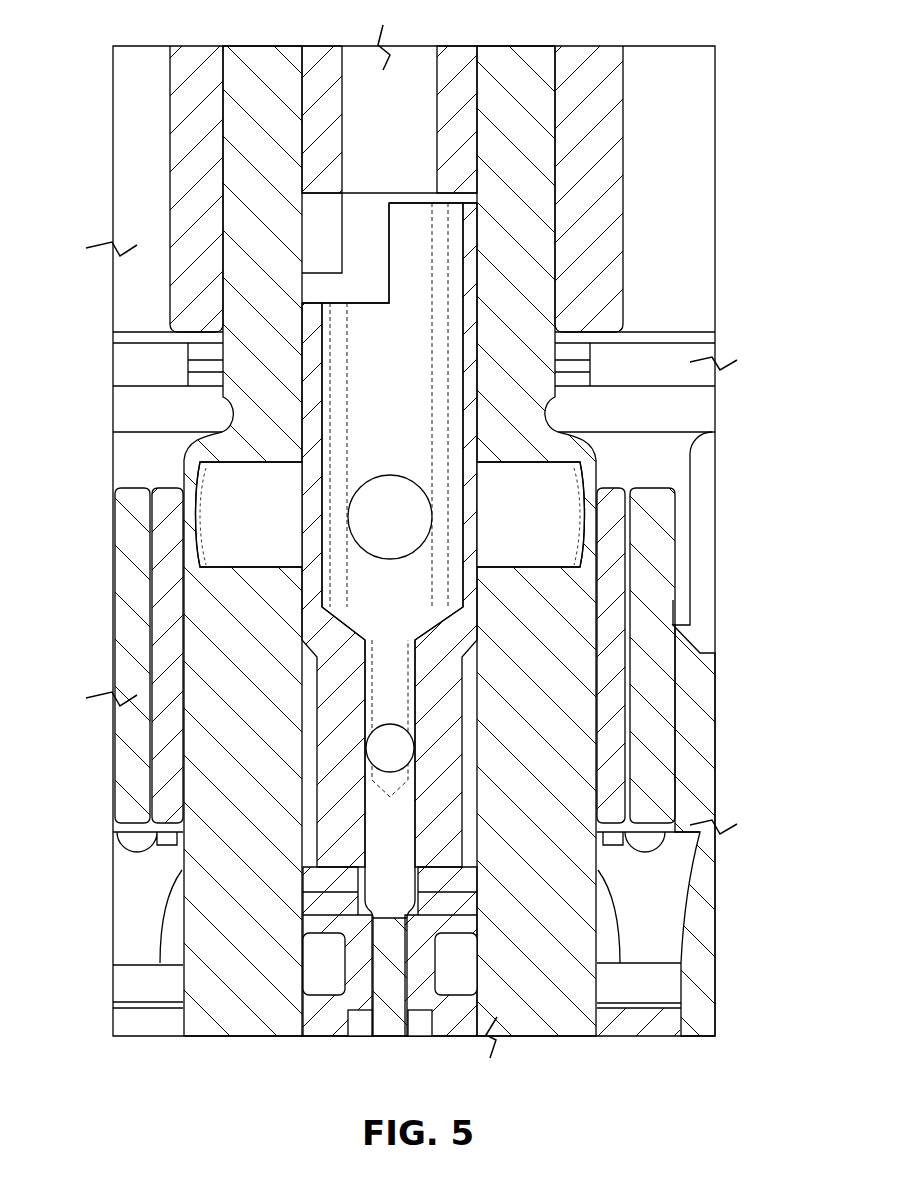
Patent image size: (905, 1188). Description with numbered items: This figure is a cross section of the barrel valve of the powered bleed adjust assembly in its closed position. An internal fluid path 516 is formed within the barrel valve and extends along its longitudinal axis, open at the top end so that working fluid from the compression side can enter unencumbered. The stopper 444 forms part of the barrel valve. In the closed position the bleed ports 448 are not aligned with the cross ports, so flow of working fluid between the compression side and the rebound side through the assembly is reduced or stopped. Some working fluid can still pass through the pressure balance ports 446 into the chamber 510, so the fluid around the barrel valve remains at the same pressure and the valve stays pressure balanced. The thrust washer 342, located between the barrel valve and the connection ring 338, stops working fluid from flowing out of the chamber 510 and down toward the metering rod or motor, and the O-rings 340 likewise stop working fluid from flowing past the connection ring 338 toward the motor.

The stopper 444 is at (468, 250).
The internal fluid path 516 is at (400, 330).
The bleed ports 448 is at (415, 508).
The pressure balance ports 446 is at (405, 748).
The chamber 510 is at (312, 756).
The thrust washer 342 is at (457, 905).
The connection ring 338 is at (443, 1032).
The O-rings 340 is at (460, 965).